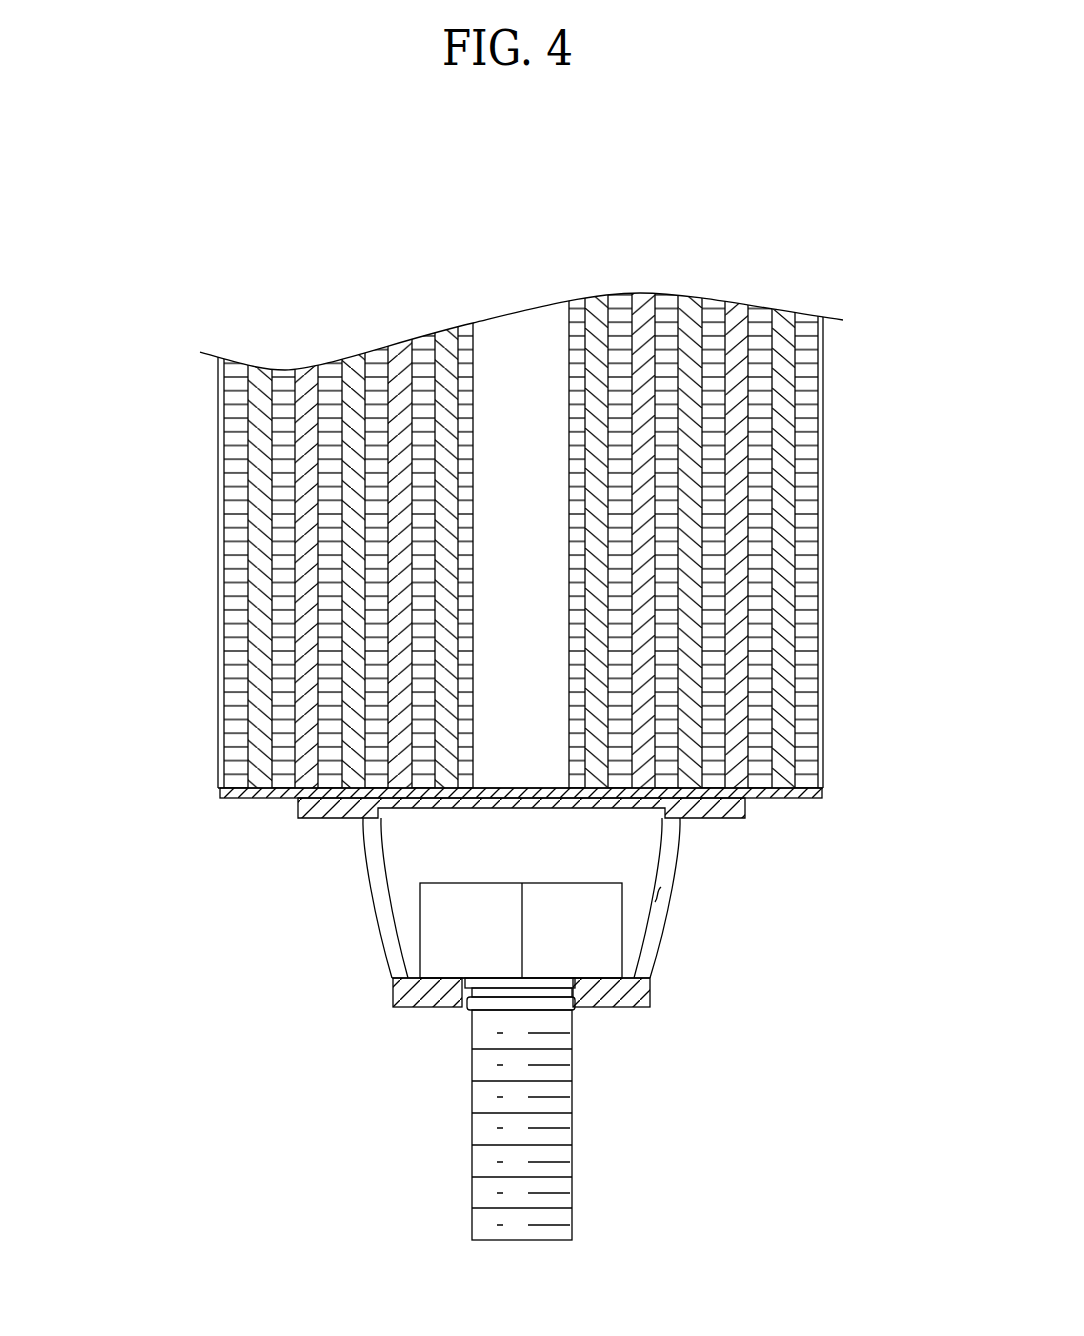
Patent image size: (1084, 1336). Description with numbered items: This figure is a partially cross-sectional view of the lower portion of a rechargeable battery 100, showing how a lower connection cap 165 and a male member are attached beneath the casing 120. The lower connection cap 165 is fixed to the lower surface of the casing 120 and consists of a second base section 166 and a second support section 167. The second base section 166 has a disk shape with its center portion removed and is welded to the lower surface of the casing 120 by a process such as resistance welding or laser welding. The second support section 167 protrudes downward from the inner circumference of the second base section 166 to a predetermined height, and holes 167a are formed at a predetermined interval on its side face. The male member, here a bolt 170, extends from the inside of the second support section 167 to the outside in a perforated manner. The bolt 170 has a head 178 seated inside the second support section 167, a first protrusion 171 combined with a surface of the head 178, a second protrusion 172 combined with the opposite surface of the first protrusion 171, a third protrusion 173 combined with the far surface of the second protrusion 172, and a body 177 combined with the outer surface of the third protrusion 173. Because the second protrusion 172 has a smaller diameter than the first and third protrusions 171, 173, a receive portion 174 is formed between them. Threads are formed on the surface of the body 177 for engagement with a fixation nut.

The rechargeable battery 100 is at (531, 182).
The casing 120 is at (836, 531).
The lower connection cap 165 is at (132, 852).
The second base section 166 is at (298, 818).
The second support section 167 is at (393, 992).
The holes 167a is at (659, 893).
The bolt 170 is at (500, 1125).
The first protrusion 171 is at (600, 984).
The second protrusion 172 is at (610, 988).
The third protrusion 173 is at (600, 1013).
The receive portion 174 is at (415, 1007).
The body 177 is at (557, 1152).
The head 178 is at (610, 938).